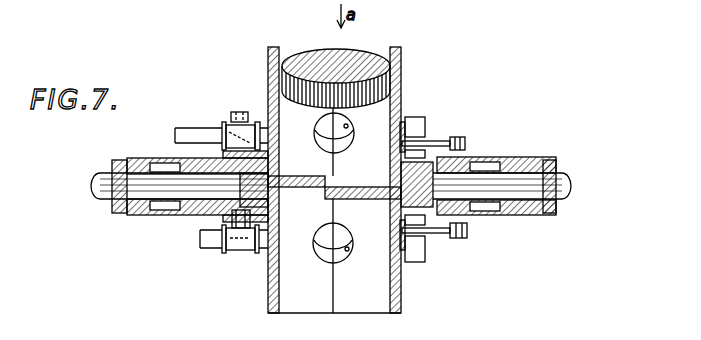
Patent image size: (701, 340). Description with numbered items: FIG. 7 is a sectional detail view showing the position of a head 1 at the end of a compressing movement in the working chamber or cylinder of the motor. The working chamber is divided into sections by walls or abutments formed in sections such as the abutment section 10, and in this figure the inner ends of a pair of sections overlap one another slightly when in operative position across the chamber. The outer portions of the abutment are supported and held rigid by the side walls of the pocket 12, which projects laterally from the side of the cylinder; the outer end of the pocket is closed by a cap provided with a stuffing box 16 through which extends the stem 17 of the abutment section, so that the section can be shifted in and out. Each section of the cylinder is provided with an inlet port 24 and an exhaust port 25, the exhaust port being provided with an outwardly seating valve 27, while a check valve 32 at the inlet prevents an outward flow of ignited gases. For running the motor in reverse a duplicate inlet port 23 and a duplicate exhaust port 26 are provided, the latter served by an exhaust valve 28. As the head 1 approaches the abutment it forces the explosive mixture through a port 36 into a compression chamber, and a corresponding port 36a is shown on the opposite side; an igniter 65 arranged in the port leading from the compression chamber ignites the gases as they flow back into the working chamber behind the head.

The head 1 is at (304, 62).
The abutment section 10 is at (328, 199).
The pocket 12 is at (236, 142).
The stuffing box 16 is at (147, 215).
The stem 17 is at (188, 215).
The inlet port 23 is at (178, 137).
The inlet port 24 is at (202, 248).
The exhaust port 25 is at (420, 117).
The exhaust port 26 is at (415, 262).
The valve 27 is at (426, 127).
The exhaust valve 28 is at (430, 240).
The check valve 32 is at (240, 114).
The port 36 is at (341, 145).
The float ball 36a is at (341, 250).
The igniter 65 is at (349, 126).